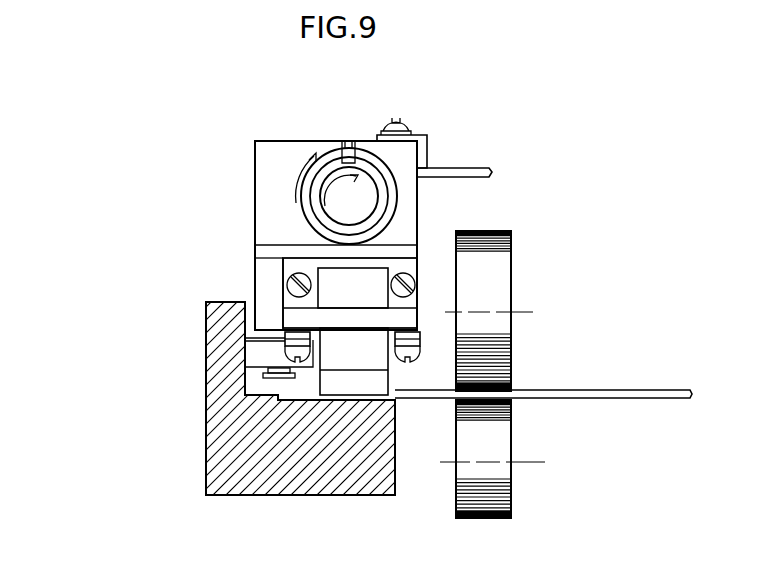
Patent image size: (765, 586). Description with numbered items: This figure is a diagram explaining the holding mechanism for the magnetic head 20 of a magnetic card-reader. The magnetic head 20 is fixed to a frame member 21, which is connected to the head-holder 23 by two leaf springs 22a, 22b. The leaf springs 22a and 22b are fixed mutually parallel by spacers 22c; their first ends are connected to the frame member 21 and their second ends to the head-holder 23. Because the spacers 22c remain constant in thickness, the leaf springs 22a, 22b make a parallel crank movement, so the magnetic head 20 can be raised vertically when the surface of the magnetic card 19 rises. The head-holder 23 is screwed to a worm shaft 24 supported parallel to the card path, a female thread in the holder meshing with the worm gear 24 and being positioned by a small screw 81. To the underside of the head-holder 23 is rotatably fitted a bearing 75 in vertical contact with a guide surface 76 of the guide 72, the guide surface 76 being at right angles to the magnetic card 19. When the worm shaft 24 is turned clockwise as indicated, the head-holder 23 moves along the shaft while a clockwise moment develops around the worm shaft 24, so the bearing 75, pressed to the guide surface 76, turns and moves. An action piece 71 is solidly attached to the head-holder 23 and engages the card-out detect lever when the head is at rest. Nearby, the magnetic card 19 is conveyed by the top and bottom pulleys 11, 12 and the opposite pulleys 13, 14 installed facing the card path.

The pulley 11 is at (529, 459).
The pulley 12 is at (503, 490).
The opposite pulley 13 is at (530, 310).
The opposite pulley 14 is at (498, 262).
The magnetic card 19 is at (611, 385).
The magnetic head 20 is at (355, 352).
The frame member 21 is at (352, 318).
The leaf spring 22a is at (268, 373).
The leaf spring 22b is at (298, 333).
The spacer 22c is at (295, 340).
The head-holder 23 is at (282, 162).
The worm shaft 24 is at (362, 196).
The action piece 71 is at (442, 170).
The guide 72 is at (252, 468).
The bearing 75 is at (253, 353).
The guide surface 76 is at (248, 318).
The small screw 81 is at (343, 137).